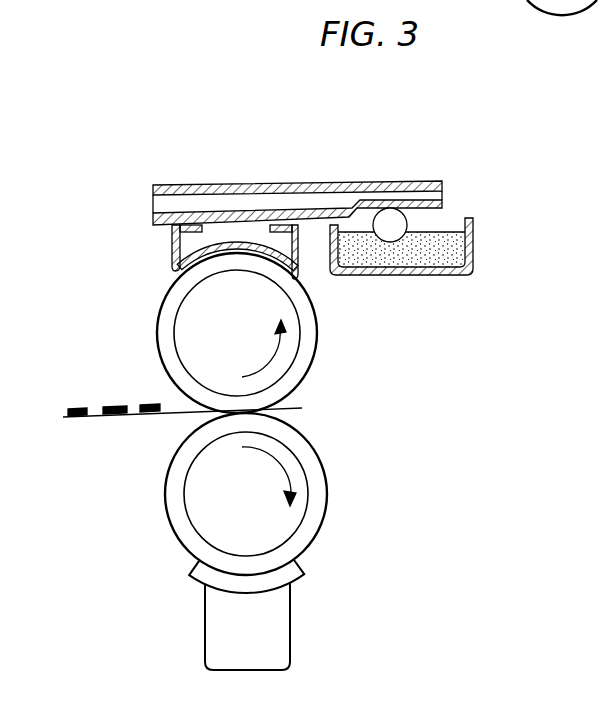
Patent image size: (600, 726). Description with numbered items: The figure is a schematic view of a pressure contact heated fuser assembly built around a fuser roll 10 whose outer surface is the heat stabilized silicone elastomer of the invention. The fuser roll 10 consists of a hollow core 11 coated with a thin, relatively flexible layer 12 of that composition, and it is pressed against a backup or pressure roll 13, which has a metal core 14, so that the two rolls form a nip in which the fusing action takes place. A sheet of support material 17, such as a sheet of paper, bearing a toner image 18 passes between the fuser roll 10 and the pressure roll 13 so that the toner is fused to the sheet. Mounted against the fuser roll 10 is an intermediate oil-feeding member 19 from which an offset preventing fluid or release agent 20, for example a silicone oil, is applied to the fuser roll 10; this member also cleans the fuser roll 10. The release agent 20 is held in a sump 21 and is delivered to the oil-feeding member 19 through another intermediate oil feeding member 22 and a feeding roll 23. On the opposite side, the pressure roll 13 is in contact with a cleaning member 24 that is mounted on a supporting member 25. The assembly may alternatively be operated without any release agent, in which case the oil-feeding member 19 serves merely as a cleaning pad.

The fuser roll 10 is at (197, 328).
The core 11 is at (202, 303).
The layer 12 is at (168, 368).
The pressure roll 13 is at (233, 541).
The metal core 14 is at (212, 497).
The sheet of support material 17 is at (100, 418).
The toner image 18 is at (107, 407).
The intermediate oil-feeding member 19 is at (170, 243).
The release agent 20 is at (367, 258).
The sump 21 is at (448, 272).
The intermediate oil feeding member 22 is at (338, 182).
The feeding roll 23 is at (391, 221).
The cleaning member 24 is at (275, 575).
The supporting member 25 is at (272, 632).